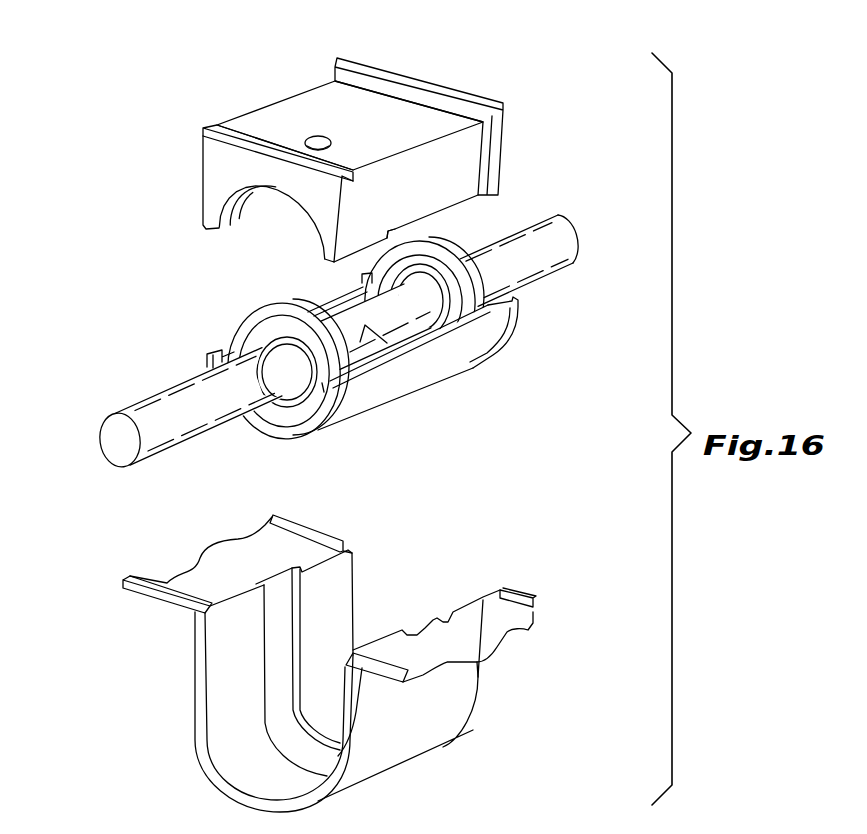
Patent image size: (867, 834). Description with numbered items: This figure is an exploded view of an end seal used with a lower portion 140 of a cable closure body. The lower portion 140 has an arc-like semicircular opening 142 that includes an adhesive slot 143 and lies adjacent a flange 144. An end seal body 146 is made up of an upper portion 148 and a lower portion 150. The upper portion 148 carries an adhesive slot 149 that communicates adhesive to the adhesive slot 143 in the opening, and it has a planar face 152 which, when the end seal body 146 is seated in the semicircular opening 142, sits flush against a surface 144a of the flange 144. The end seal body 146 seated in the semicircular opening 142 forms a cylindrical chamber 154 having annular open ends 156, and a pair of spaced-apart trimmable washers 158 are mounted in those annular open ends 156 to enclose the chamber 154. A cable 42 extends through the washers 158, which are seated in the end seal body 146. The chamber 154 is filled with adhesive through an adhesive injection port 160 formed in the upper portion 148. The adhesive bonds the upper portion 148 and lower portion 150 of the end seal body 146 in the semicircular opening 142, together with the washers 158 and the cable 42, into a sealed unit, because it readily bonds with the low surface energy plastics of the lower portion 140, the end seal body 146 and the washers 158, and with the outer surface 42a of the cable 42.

The end seal body 146 is at (148, 188).
The upper portion 148 is at (408, 82).
The planar face 152 is at (273, 122).
The adhesive injection port 160 is at (312, 136).
The adhesive slot 149 is at (422, 217).
The cylindrical chamber 154 is at (254, 216).
The annular open ends 156 is at (318, 226).
The cable 42 is at (572, 225).
The outer surface of cable 42a is at (167, 427).
The trimmable washers 158 is at (235, 342).
The lower portion 150 is at (205, 362).
The lower portion of cable closure body 140 is at (380, 678).
The semicircular opening 142 is at (192, 657).
The adhesive slot 143 is at (423, 630).
The flange 144 is at (522, 595).
The surface of flange 144a is at (465, 593).